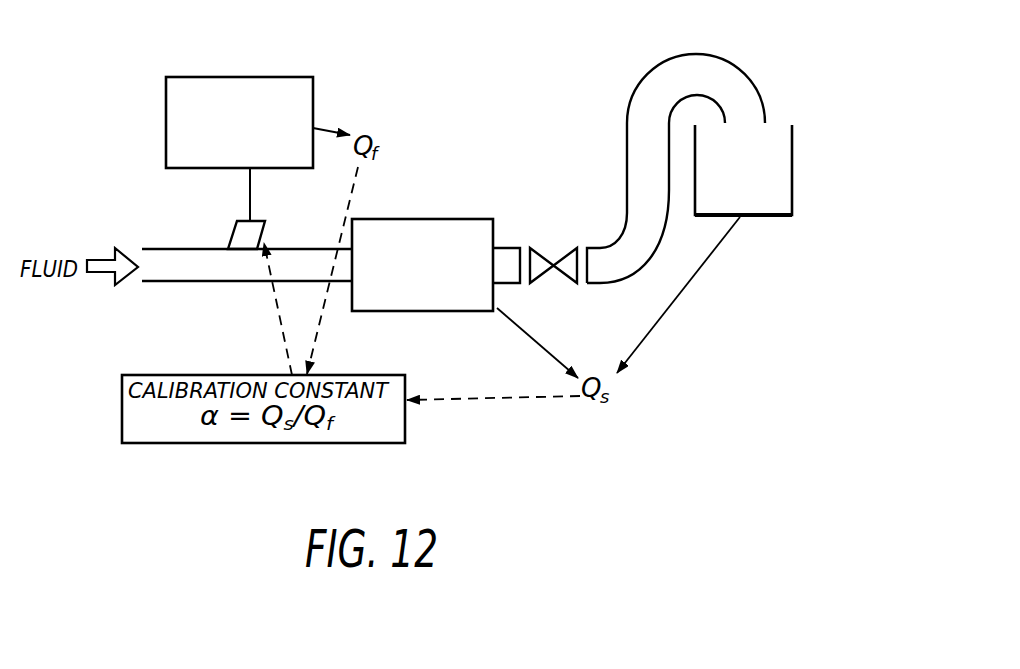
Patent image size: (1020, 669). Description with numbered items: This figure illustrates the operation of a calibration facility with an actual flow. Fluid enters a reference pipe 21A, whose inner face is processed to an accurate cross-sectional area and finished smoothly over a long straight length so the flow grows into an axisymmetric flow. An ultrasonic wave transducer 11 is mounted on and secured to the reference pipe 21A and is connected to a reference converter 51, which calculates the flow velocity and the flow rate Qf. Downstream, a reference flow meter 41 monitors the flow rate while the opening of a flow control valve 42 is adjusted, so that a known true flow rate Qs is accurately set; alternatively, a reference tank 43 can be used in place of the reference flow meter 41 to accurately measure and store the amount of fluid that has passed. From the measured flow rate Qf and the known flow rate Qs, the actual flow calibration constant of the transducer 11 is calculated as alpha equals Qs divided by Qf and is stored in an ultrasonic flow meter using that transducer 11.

The reference converter 51 is at (208, 77).
The ultrasonic wave transducer 11 is at (233, 236).
The reference pipe 21A is at (217, 271).
The reference flow meter 41 is at (395, 226).
The flow control valve 42 is at (545, 248).
The reference tank 43 is at (768, 217).